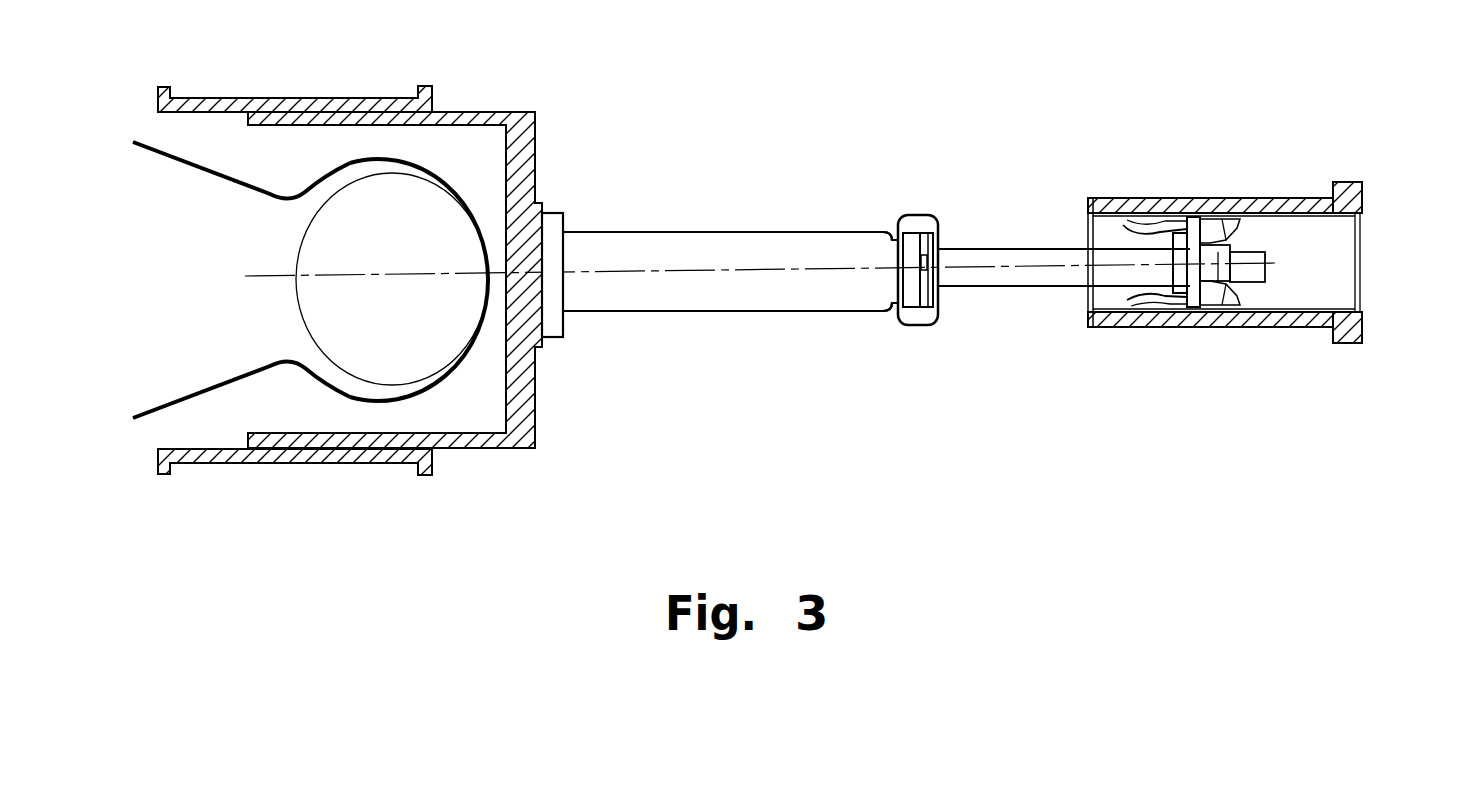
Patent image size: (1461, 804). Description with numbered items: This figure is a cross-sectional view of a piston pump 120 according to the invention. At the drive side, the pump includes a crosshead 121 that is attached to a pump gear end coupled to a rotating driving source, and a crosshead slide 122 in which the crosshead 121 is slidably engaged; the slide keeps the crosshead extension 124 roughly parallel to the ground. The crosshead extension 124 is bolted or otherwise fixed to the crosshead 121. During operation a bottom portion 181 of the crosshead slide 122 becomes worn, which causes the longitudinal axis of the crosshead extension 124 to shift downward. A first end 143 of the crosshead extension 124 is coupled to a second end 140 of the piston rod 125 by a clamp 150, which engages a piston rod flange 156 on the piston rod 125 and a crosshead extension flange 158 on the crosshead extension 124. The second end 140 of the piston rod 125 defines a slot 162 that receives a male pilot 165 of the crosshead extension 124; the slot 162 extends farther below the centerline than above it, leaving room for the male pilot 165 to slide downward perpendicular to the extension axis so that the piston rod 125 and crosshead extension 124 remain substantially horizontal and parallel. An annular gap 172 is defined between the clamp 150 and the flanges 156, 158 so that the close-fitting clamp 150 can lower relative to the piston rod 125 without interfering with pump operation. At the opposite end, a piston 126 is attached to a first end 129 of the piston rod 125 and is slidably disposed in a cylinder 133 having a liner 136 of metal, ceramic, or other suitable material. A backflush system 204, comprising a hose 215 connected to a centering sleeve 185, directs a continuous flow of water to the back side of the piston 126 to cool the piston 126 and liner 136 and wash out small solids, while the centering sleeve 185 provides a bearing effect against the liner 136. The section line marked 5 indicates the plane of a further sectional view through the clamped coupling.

The piston pump 120 is at (812, 462).
The crosshead 121 is at (463, 112).
The crosshead slide 122 is at (311, 98).
The crosshead extension 124 is at (731, 246).
The piston rod 125 is at (1033, 262).
The piston 126 is at (1283, 282).
The first end of the piston rod 129 is at (1163, 293).
The cylinder 133 is at (1272, 208).
The liner 136 is at (1372, 232).
The second end of the piston rod 140 is at (973, 222).
The first end of the crosshead extension 143 is at (878, 242).
The clamp 150 is at (921, 224).
The piston rod flange 156 is at (945, 297).
The crosshead extension flange 158 is at (886, 222).
The slot 162 is at (940, 280).
The male pilot 165 is at (877, 305).
The annular gap 172 is at (914, 323).
The bottom portion of the crosshead slide 181 is at (402, 463).
The centering sleeve 185 is at (1180, 214).
The backflush system 204 is at (1147, 219).
The hose 215 is at (1124, 216).
The section line 5 is at (915, 113).